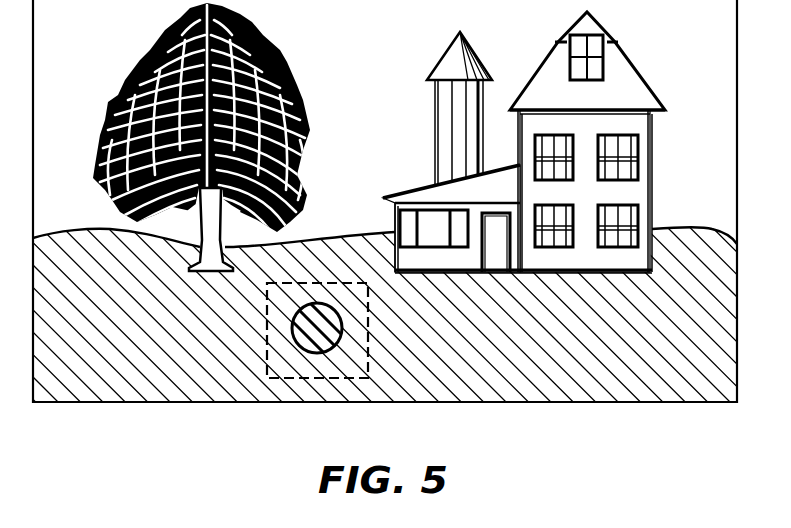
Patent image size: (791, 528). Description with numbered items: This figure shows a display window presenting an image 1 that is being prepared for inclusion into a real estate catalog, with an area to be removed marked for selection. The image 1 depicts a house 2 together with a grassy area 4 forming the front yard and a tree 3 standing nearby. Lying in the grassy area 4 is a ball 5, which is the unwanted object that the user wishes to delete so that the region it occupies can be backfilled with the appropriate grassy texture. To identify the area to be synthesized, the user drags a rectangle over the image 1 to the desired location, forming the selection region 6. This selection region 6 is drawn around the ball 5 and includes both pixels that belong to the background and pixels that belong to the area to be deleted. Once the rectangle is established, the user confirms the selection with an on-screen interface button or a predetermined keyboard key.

The image 1 is at (740, 188).
The house 2 is at (653, 188).
The tree 3 is at (277, 86).
The grassy area 4 is at (72, 240).
The ball 5 is at (316, 302).
The selection region 6 is at (275, 384).